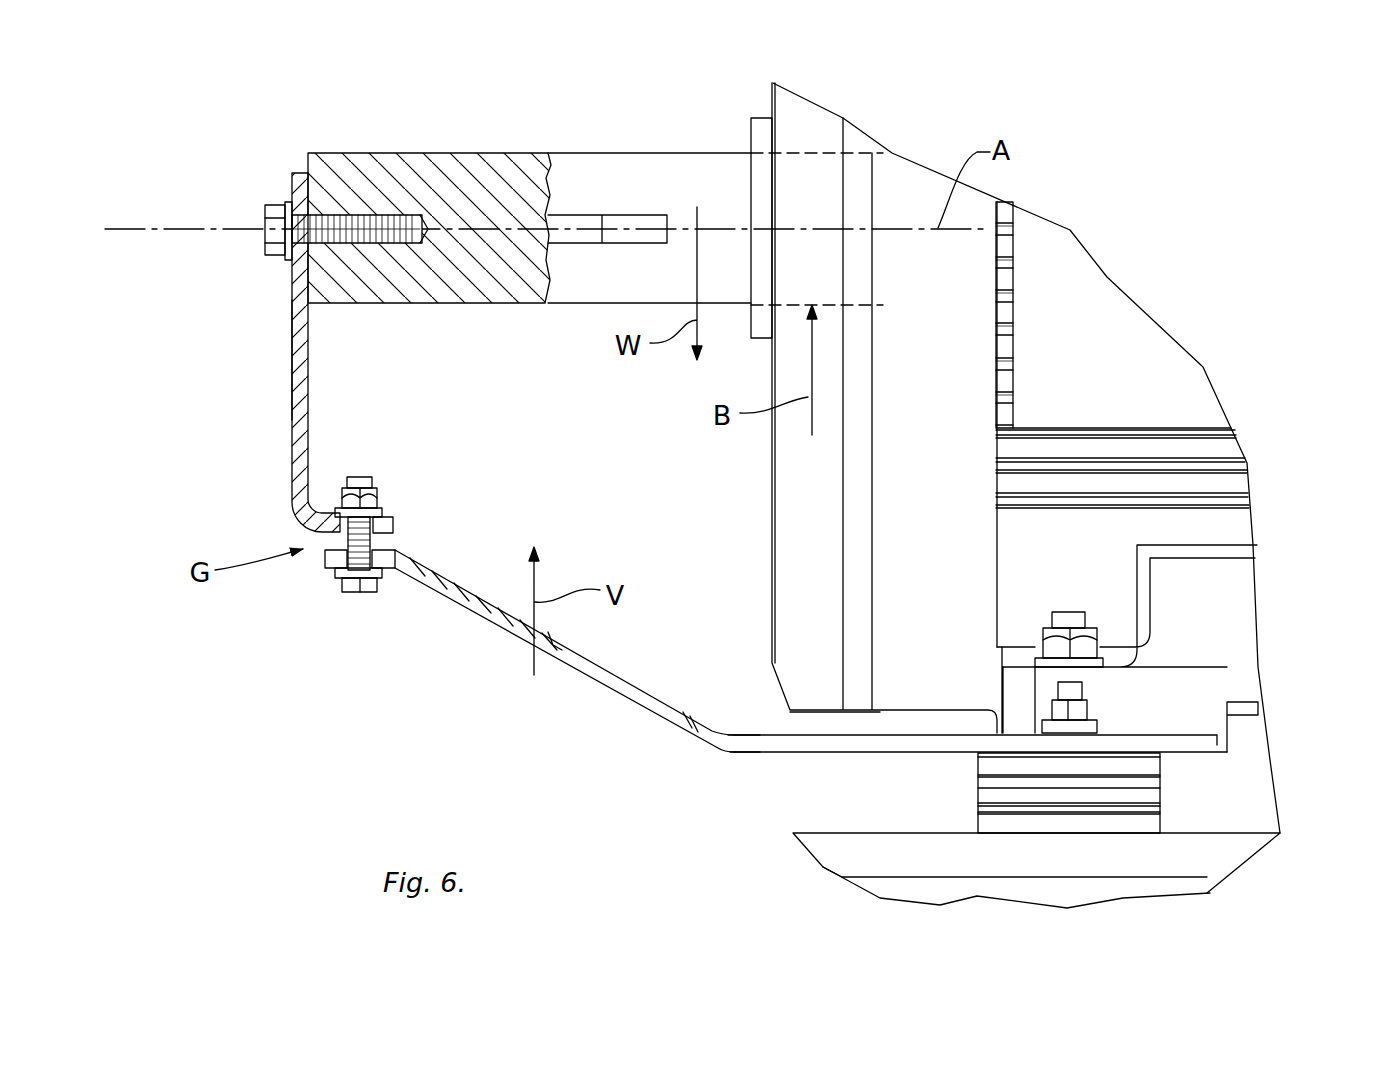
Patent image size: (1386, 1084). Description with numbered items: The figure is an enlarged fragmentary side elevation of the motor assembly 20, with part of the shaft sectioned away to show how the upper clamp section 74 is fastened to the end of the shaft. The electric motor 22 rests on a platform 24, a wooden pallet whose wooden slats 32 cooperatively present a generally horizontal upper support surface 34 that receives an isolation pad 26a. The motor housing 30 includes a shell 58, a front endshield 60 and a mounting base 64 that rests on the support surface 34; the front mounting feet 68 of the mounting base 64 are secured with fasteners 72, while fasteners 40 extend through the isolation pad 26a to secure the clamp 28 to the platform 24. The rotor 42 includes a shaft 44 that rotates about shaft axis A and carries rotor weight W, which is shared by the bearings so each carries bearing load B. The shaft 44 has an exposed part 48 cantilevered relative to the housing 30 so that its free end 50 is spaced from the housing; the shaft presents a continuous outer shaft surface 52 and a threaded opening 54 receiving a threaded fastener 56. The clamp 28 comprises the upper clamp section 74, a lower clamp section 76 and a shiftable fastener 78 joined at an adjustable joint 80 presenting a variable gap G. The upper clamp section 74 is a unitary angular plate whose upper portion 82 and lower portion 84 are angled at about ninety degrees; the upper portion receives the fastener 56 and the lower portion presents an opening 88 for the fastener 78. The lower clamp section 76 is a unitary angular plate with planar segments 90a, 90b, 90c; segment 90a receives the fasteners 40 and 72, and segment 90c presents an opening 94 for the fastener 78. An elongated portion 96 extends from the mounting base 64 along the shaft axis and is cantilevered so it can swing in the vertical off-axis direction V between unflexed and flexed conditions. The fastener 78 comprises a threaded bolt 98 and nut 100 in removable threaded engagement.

The motor assembly 20 is at (1180, 189).
The electric motor 22 is at (1227, 458).
The platform 24 is at (1162, 865).
The isolation pad 26a is at (1147, 797).
The clamp 28 is at (727, 743).
The motor housing 30 is at (1227, 505).
The wooden slats 32 is at (1230, 853).
The upper support surface 34 is at (1250, 832).
The fasteners 40 is at (1078, 710).
The rotor 42 is at (733, 163).
The shaft 44 is at (633, 162).
The exposed part 48 is at (567, 162).
The free end 50 is at (255, 137).
The outer shaft surface 52 is at (578, 288).
The threaded opening 54 is at (392, 212).
The threaded fastener 56 is at (272, 237).
The shell 58 is at (1167, 450).
The front endshield 60 is at (798, 108).
The mounting base 64 is at (1230, 678).
The front mounting feet 68 is at (1023, 698).
The fasteners 72 is at (1083, 636).
The upper clamp section 74 is at (300, 337).
The lower clamp section 76 is at (765, 747).
The shiftable fastener 78 is at (348, 592).
The adjustable joint 80 is at (253, 634).
The upper portion 82 is at (302, 388).
The lower portion 84 is at (392, 525).
The opening 88 is at (375, 522).
The planar segment 90a is at (858, 742).
The planar segment 90b is at (618, 683).
The planar segment 90c is at (385, 563).
The opening 94 is at (373, 555).
The elongated portion 96 is at (456, 726).
The threaded bolt 98 is at (370, 592).
The nut 100 is at (367, 498).